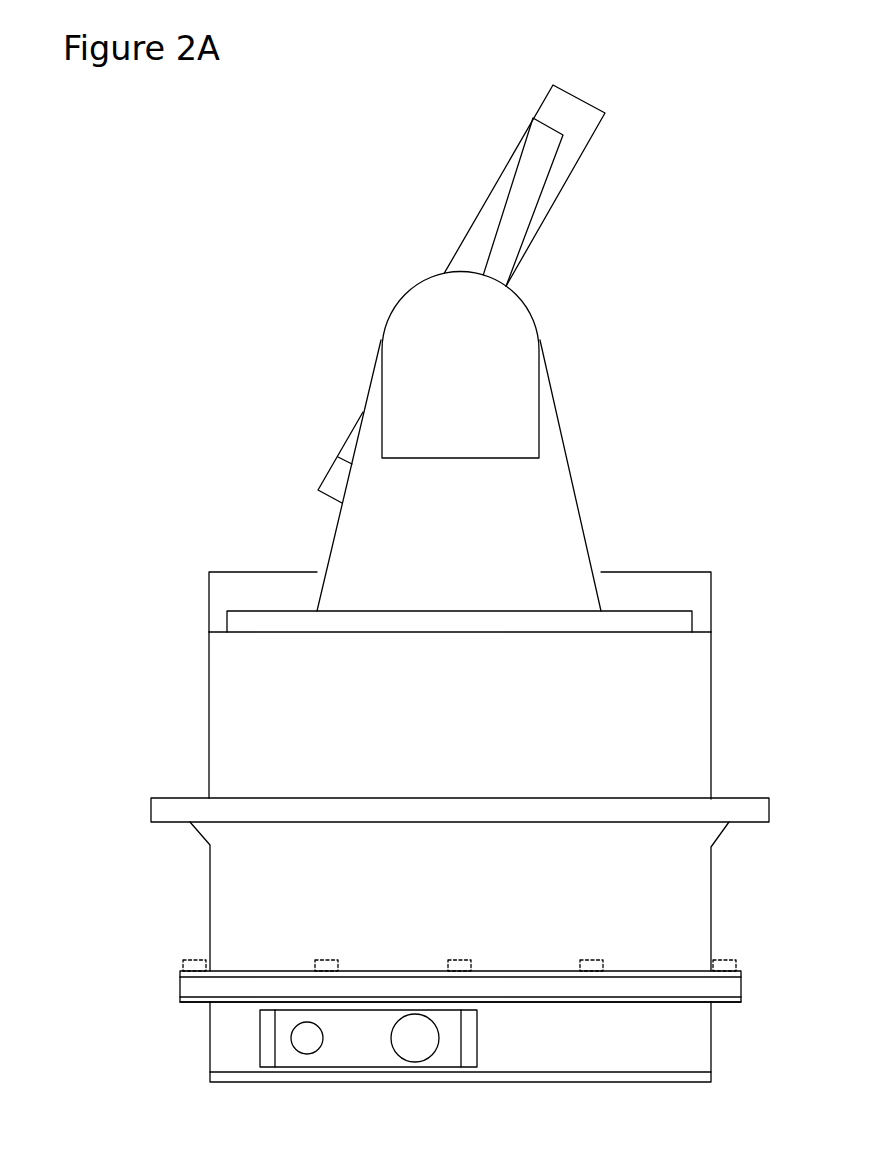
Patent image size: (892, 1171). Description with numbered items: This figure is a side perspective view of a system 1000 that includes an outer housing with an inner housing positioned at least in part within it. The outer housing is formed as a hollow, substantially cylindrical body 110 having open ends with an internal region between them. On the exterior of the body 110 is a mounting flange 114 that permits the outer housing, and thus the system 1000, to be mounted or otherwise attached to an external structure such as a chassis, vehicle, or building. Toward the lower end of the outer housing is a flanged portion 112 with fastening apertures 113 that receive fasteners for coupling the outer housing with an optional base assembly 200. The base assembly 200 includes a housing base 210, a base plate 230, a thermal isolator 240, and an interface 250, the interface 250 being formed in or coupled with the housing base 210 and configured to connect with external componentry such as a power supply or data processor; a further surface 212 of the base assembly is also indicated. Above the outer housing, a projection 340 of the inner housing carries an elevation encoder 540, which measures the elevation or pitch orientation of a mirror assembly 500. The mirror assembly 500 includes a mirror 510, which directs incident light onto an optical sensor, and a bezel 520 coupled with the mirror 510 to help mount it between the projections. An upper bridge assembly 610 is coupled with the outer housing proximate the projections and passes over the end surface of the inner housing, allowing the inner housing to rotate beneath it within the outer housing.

The system 1000 is at (663, 413).
The mirror assembly 500 is at (497, 47).
The mirror 510 is at (529, 160).
The bezel 520 is at (554, 118).
The elevation encoder 540 is at (478, 378).
The projection 340 is at (478, 496).
The upper bridge assembly 610 is at (255, 601).
The body 110 is at (478, 726).
The mounting flange 114 is at (177, 797).
The flanged portion 112 is at (240, 969).
The fastening apertures 113 is at (195, 968).
The base assembly 200 is at (95, 975).
The thermal isolator 240 is at (180, 987).
The plate underside 212 is at (187, 1003).
The housing base 210 is at (208, 1042).
The interface 250 is at (377, 1050).
The base plate 230 is at (208, 1078).